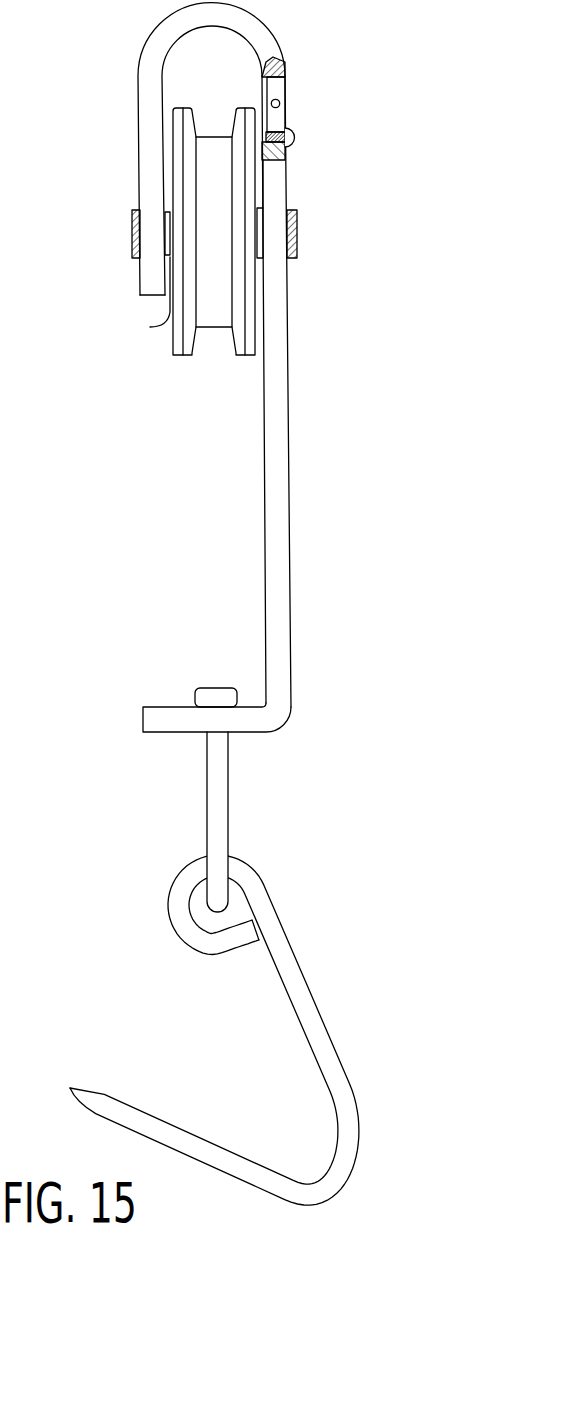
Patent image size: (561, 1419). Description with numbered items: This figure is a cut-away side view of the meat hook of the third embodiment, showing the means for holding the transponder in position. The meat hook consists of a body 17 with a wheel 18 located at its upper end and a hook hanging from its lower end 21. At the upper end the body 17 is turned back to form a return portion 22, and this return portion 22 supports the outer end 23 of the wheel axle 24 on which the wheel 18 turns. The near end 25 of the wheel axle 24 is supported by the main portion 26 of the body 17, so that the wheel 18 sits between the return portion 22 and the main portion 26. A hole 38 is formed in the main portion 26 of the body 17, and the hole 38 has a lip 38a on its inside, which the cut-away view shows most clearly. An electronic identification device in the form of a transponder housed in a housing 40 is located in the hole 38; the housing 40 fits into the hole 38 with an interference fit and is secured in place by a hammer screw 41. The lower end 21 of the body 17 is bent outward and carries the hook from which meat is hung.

The body 17 is at (263, 462).
The wheel 18 is at (180, 346).
The lower end 21 is at (150, 722).
The return portion 22 is at (150, 143).
The outer end 23 is at (135, 230).
The wheel axle 24 is at (150, 327).
The near end 25 is at (294, 245).
The main portion 26 is at (279, 191).
The hole 38 is at (286, 76).
The lip 38a is at (273, 118).
The housing 40 is at (287, 103).
The hammer screw 41 is at (299, 141).